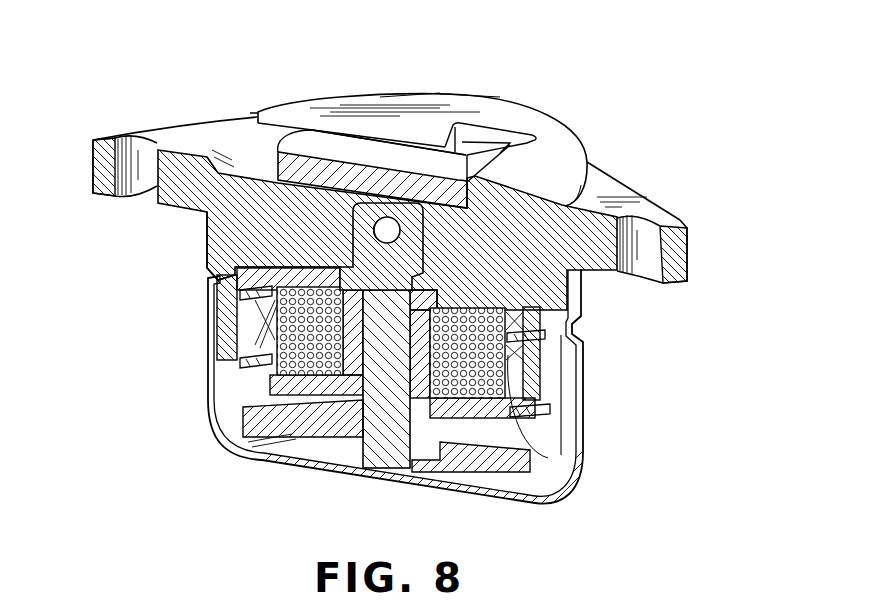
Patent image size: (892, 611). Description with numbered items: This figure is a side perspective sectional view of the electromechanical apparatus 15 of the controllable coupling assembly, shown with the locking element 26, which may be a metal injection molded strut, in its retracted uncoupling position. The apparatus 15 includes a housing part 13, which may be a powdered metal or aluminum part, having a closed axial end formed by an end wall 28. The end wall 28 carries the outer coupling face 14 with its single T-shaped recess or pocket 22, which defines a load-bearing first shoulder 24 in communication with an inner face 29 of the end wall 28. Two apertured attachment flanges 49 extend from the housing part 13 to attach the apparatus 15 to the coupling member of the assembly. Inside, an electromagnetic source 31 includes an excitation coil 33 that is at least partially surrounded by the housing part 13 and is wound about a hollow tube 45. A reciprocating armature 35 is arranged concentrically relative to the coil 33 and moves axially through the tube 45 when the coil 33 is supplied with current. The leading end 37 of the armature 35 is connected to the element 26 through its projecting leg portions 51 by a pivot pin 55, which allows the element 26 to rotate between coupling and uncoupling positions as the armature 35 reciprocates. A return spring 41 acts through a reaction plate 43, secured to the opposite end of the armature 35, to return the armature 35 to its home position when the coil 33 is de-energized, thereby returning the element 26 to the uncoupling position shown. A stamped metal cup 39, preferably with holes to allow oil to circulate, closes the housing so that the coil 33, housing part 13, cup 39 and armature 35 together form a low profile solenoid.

The housing part 13 is at (530, 158).
The outer coupling face 14 is at (503, 120).
The electromechanical apparatus 15 is at (468, 96).
The recess or pocket 22 is at (257, 165).
The load-bearing first shoulder 24 is at (548, 150).
The locking element 26 is at (377, 126).
The end wall 28 is at (430, 107).
The inner face 29 is at (215, 268).
The electromagnetic source 31 is at (548, 460).
The excitation coil 33 is at (515, 366).
The reciprocating armature 35 is at (386, 472).
The leading end 37 is at (338, 240).
The stamped metal cup 39 is at (532, 502).
The return spring 41 is at (268, 378).
The reaction plate 43 is at (317, 443).
The hollow tube 45 is at (348, 395).
The apertured attachment flange 49 is at (105, 197).
The projecting leg portion 51 is at (430, 242).
The pivot pin 55 is at (355, 247).